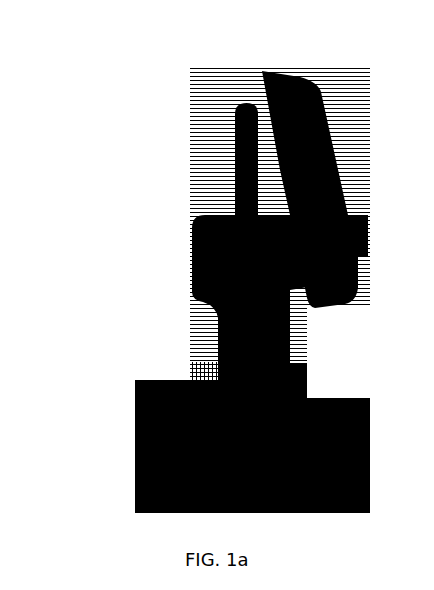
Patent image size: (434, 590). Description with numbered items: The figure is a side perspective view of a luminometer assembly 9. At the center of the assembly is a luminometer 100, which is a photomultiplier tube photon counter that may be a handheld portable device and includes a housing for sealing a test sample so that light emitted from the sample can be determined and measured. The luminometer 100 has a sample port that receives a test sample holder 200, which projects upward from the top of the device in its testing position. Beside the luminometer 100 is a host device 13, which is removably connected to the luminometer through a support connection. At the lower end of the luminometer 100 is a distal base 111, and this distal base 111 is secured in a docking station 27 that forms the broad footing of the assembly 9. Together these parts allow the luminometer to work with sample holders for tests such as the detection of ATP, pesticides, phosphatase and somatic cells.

The luminometer assembly 9 is at (58, 174).
The host device 13 is at (320, 90).
The docking station 27 is at (320, 398).
The luminometer 100 is at (192, 275).
The distal base 111 is at (190, 368).
The test sample holder 200 is at (235, 158).